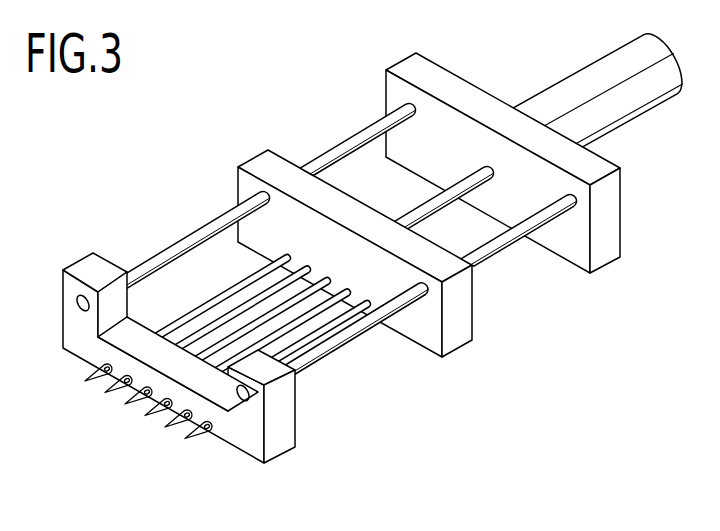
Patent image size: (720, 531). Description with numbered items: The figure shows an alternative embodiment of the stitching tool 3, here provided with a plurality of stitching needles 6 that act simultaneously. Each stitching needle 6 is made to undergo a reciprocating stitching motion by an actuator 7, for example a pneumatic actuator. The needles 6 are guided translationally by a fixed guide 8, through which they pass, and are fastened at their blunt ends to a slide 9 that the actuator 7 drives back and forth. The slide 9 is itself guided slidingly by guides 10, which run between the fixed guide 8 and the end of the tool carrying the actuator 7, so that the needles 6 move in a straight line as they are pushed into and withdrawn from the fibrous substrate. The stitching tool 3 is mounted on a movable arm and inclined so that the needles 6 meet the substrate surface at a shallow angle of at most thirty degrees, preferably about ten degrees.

The stitching tool 3 is at (378, 269).
The stitching needle 6 is at (230, 345).
The actuator 7 is at (607, 115).
The fixed guide 8 is at (282, 437).
The slide 9 is at (460, 313).
The guides 10 is at (311, 352).